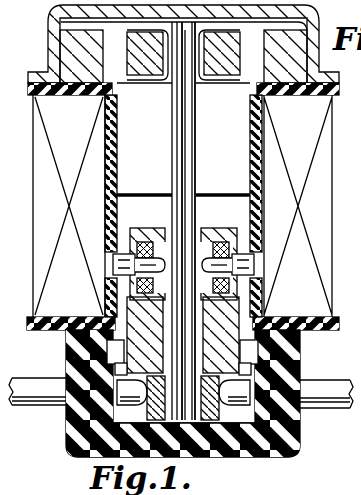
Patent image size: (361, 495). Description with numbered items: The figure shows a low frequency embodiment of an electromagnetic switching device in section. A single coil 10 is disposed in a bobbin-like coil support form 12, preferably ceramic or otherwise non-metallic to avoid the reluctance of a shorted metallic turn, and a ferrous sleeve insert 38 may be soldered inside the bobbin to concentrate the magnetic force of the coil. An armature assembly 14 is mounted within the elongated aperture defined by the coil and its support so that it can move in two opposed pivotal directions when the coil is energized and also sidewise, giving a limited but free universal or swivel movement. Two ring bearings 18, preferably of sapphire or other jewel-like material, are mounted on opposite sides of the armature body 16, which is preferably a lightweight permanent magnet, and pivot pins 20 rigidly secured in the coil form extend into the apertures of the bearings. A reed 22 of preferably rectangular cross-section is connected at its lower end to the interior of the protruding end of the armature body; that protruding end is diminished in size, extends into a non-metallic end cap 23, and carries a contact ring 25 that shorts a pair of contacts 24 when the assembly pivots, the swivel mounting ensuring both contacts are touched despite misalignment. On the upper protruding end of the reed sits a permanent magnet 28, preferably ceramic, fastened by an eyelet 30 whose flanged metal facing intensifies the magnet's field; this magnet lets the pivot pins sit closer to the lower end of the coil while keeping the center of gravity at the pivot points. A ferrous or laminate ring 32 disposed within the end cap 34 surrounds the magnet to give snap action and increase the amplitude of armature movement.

The coil 10 is at (78, 146).
The coil support form 12 is at (325, 330).
The armature assembly 14 is at (216, 221).
The armature body 16 is at (141, 233).
The ring bearings 18 is at (140, 233).
The pivot pins 20 is at (111, 266).
The reed 22 is at (197, 140).
The end cap 23 is at (298, 447).
The pair of contacts 24 is at (37, 408).
The contact ring 25 is at (224, 454).
The permanent magnet 28 is at (56, 21).
The eyelet 30 is at (212, 79).
The ferrous or laminate ring 32 is at (70, 48).
The end cap 34 is at (320, 21).
The ferrous sleeve insert 38 is at (118, 136).